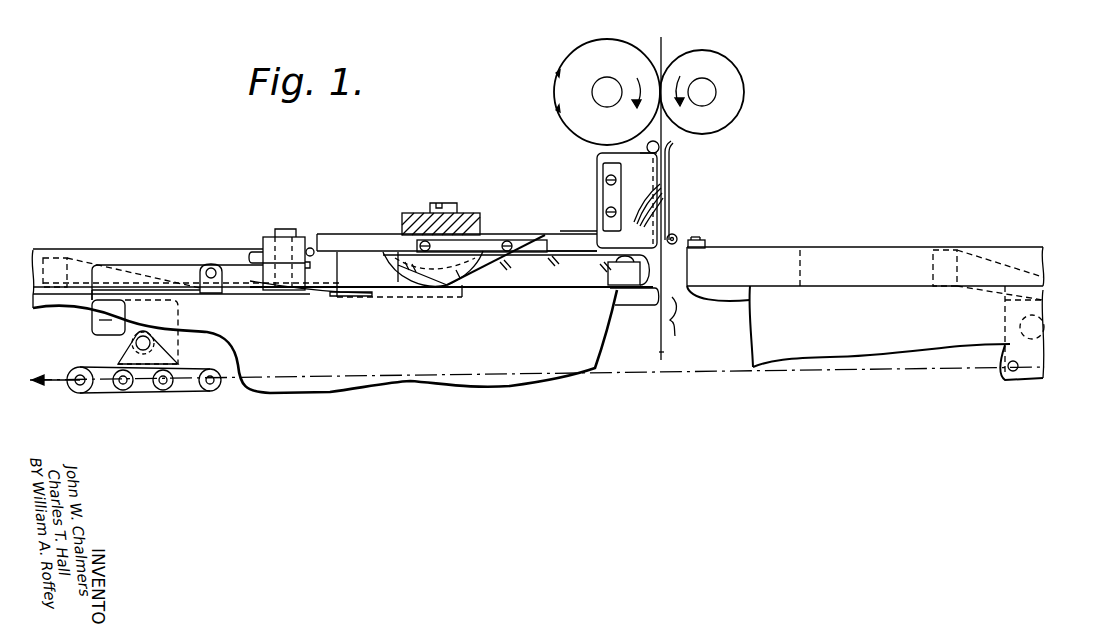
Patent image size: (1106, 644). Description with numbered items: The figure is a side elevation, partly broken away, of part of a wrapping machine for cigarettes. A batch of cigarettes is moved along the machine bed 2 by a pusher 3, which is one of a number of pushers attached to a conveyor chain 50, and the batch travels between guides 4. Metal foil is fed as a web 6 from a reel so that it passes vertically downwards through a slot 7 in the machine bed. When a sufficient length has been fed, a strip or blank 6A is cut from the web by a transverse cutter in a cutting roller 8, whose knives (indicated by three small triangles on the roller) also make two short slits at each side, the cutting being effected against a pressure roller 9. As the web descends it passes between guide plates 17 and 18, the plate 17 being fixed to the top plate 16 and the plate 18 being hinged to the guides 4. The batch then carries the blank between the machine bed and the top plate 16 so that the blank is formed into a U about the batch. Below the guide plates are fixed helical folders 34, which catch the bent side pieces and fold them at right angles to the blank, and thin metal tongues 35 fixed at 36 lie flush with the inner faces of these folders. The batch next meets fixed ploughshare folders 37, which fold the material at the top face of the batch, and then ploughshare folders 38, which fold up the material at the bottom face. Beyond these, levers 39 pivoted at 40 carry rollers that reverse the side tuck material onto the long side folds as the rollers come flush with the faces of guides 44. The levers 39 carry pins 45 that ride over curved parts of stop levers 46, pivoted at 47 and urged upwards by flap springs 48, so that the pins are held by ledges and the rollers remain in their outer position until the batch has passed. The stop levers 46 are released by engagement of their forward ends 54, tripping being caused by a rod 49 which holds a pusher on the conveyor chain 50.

The machine bed 2 is at (866, 337).
The pusher 3 is at (958, 263).
The guides 4 is at (850, 258).
The web 6 is at (663, 45).
The strip or blank 6A is at (666, 352).
The slot 7 is at (677, 327).
The cutting roller 8 is at (577, 125).
The pressure roller 9 is at (733, 92).
The top plate 16 is at (580, 238).
The guide plate 17 is at (641, 153).
The guide plate 18 is at (670, 207).
The helical folders 34 is at (666, 200).
The thin metal tongues 35 is at (562, 276).
The fixing point of tongues 36 is at (627, 281).
The fixed ploughshare folders 37 is at (540, 240).
The ploughshare folders 38 is at (402, 281).
The levers 39 is at (313, 249).
The pivot 40 is at (300, 236).
The guides 44 is at (170, 257).
The pins 45 is at (270, 236).
The stop levers 46 is at (191, 266).
The pivot 47 is at (222, 265).
The flap springs 48 is at (330, 296).
The rod 49 is at (162, 345).
The conveyor chain 50 is at (80, 367).
The forward ends 54 is at (100, 321).